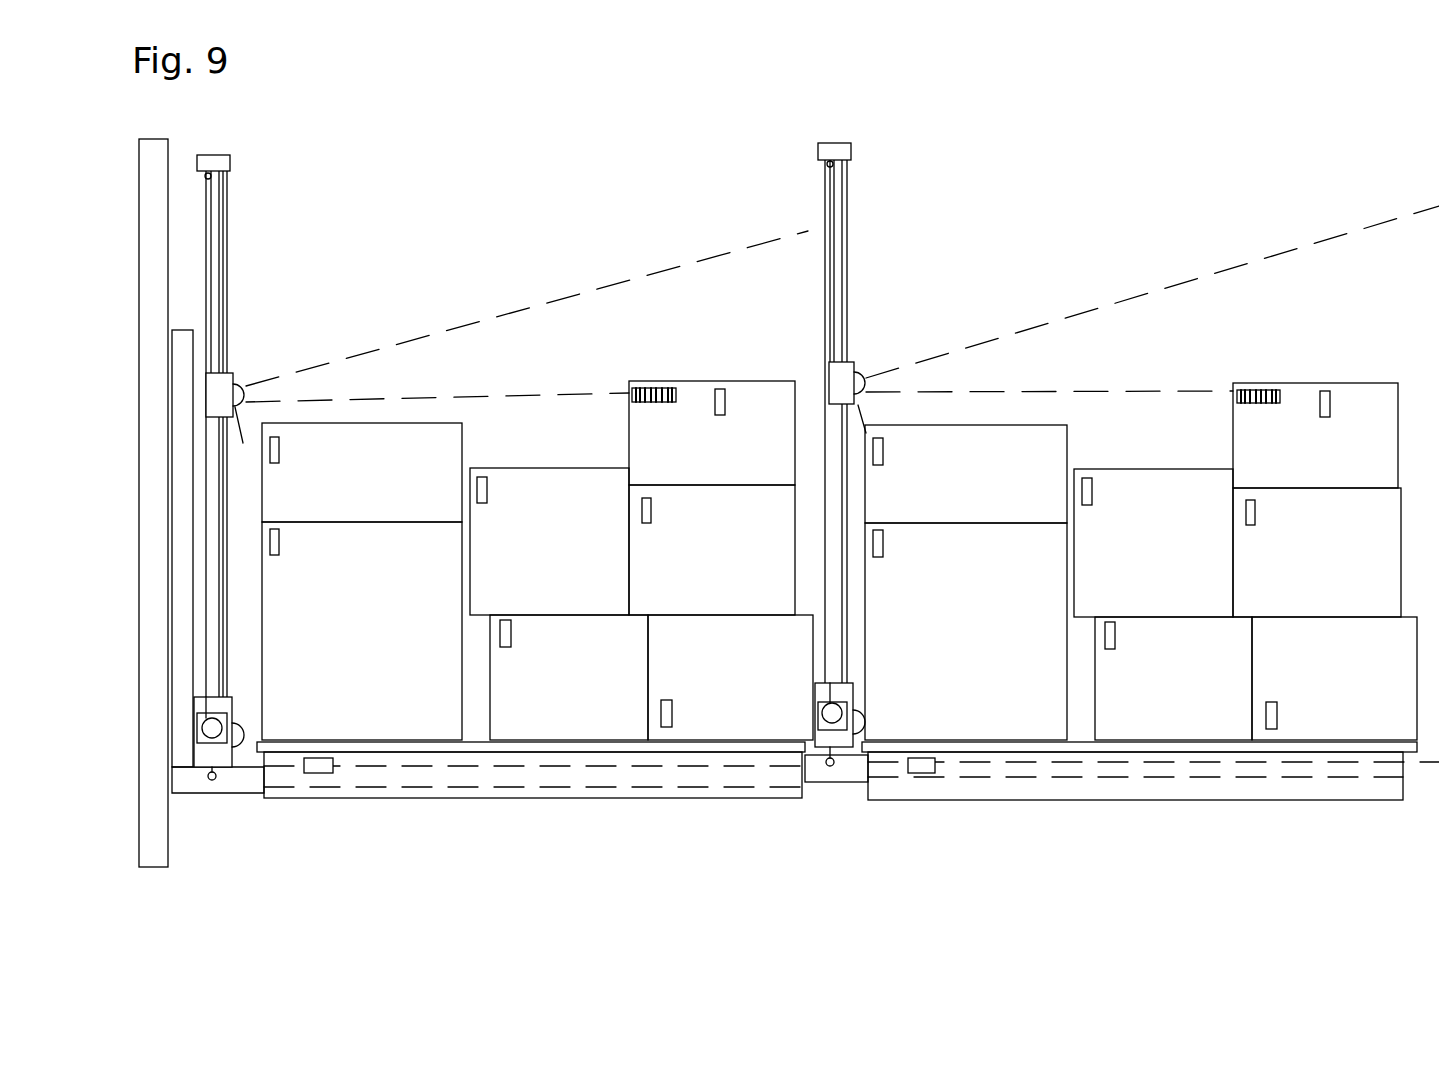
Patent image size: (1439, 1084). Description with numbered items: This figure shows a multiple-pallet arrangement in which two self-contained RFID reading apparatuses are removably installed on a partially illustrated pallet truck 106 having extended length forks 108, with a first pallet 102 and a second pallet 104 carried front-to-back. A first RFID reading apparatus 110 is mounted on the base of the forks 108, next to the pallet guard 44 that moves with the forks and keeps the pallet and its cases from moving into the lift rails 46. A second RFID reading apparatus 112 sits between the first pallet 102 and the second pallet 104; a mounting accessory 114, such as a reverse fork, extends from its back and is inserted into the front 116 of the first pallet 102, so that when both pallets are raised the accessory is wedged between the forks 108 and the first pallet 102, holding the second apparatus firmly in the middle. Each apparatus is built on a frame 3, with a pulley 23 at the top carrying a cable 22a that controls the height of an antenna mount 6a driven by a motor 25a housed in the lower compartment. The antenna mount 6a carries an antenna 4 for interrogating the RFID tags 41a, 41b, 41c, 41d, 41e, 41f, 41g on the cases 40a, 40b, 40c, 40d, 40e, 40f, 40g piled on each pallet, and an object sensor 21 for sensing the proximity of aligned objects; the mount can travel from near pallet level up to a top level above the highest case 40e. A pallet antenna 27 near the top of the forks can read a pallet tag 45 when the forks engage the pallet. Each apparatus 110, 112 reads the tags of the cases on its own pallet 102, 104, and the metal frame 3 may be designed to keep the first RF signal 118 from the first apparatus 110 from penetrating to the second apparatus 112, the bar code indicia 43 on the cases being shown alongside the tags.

The frame 3 is at (222, 162).
The antenna 4 is at (240, 387).
The antenna mount 6a is at (233, 376).
The object sensor 21 is at (556, 441).
The cable 22a is at (213, 282).
The pulley 23 is at (210, 179).
The motor 25a is at (218, 738).
The pallet antenna 27 is at (243, 745).
The case 40a is at (382, 501).
The case 40b is at (382, 654).
The case 40c is at (735, 467).
The case 40d is at (592, 706).
The case 40e is at (579, 567).
The case 40f is at (748, 567).
The case 40g is at (756, 697).
The RFID tag 41a is at (279, 445).
The RFID tag 41b is at (279, 548).
The RFID tag 41c is at (725, 400).
The RFID tag 41d is at (842, 636).
The RFID tag 41e is at (487, 487).
The RFID tag 41f is at (651, 518).
The RFID tag 41g is at (670, 700).
The bar code 43 is at (660, 394).
The pallet guard 44 is at (180, 460).
The pallet tag 45 is at (324, 767).
The lift rails 46 is at (924, 529).
The first pallet 102 is at (487, 777).
The second pallet 104 is at (1090, 780).
The pallet truck 106 is at (157, 577).
The extended length forks 108 is at (187, 783).
The first RFID reading apparatus 110 is at (230, 145).
The second RFID reading apparatus 112 is at (871, 139).
The mounting accessory 114 is at (817, 755).
The front of the first pallet 116 is at (813, 797).
The first RF signal 118 is at (447, 327).